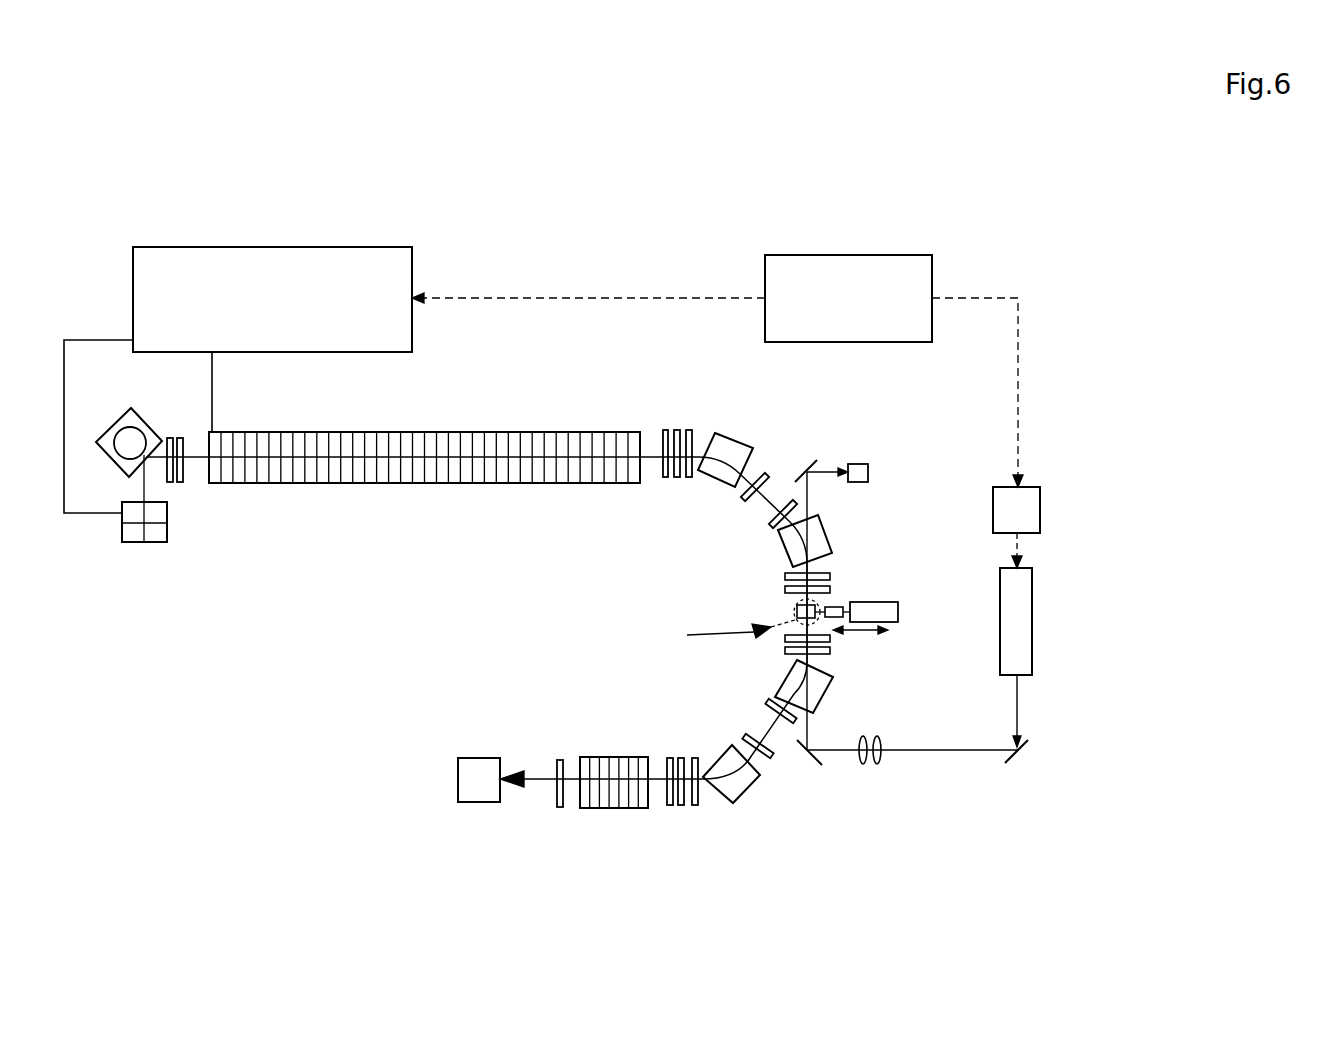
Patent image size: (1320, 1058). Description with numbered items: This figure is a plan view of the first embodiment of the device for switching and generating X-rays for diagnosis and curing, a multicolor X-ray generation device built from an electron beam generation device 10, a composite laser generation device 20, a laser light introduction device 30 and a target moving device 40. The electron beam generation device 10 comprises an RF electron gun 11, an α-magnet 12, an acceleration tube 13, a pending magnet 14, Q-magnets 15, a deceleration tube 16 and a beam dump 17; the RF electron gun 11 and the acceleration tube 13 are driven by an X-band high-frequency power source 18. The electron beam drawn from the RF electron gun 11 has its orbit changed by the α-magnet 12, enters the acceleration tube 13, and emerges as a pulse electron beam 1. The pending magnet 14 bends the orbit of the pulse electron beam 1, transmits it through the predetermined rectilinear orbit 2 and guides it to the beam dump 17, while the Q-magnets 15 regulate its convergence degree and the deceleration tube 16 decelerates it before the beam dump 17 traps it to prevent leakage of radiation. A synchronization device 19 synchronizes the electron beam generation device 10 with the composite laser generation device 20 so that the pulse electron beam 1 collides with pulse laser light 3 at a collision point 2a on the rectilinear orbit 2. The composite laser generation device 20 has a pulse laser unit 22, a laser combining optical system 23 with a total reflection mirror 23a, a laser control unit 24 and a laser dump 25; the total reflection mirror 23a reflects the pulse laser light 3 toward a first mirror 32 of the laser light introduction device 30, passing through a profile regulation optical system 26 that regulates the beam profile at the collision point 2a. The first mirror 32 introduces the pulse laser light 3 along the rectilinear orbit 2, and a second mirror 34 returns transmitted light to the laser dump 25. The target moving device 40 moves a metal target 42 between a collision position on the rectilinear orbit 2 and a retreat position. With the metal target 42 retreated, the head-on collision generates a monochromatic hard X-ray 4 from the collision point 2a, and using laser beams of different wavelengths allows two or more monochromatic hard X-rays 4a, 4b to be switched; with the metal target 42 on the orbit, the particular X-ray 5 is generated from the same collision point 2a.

The pulse electron beam 1 is at (655, 458).
The predetermined rectilinear orbit 2 is at (786, 639).
The collision point 2a is at (790, 610).
The pulse laser light 3 is at (828, 752).
The monochromatic hard X-ray 4 is at (657, 637).
The monochromatic hard X-ray 4a is at (761, 631).
The monochromatic hard X-ray 4b is at (783, 623).
The particular X-ray 5 is at (637, 637).
The electron beam generation device 10 is at (183, 572).
The RF electron gun 11 is at (128, 533).
The α-magnet 12 is at (123, 423).
The acceleration tube 13 is at (463, 428).
The pending magnet 14 is at (732, 448).
The Q-magnets 15 is at (785, 578).
The deceleration tube 16 is at (598, 752).
The beam dump 17 is at (475, 765).
The high-frequency power source 18 is at (285, 318).
The synchronization device 19 is at (862, 318).
The composite laser generation device 20 is at (1099, 567).
The pulse laser unit 22 is at (1025, 603).
The laser combining optical system 23 is at (1048, 796).
The total reflection mirror 23a is at (1010, 757).
The laser control unit 24 is at (1032, 510).
The laser dump 25 is at (862, 468).
The profile regulation optical system 26 is at (872, 772).
The laser light introduction device 30 is at (761, 813).
The first mirror 32 is at (800, 750).
The second mirror 34 is at (810, 458).
The target moving device 40 is at (880, 570).
The metal target 42 is at (838, 605).